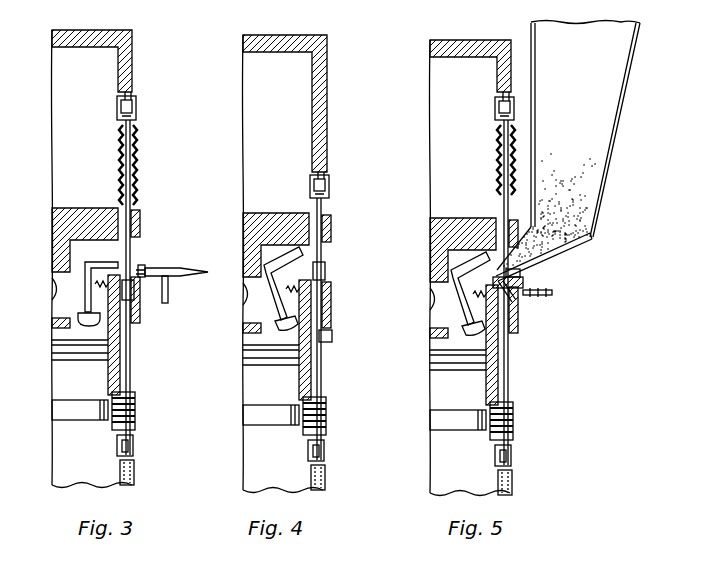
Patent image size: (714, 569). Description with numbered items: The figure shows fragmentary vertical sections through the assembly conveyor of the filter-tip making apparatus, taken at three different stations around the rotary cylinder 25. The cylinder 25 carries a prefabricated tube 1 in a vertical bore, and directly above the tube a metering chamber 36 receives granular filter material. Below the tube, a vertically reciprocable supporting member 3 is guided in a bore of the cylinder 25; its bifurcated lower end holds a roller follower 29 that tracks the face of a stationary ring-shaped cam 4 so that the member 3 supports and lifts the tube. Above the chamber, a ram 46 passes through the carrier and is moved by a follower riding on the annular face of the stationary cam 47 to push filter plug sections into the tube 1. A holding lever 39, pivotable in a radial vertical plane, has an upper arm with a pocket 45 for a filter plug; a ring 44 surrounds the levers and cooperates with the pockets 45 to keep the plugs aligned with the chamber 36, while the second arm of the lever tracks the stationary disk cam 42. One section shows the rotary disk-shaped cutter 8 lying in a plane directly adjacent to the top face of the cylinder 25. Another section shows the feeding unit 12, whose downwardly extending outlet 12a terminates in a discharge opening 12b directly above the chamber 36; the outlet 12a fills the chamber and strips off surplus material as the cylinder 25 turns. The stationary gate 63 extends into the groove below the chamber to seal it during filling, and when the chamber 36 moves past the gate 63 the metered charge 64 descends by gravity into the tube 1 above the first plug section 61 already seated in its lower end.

In FIG. 3, the prefabricated tube 1 is at (138, 330).
In FIG. 4, the prefabricated tube 1 is at (340, 305).
In FIG. 3, the supporting member 3 is at (137, 404).
In FIG. 3, the ring-shaped cam 4 is at (134, 474).
In FIG. 3, the rotary disk-shaped cutter 8 is at (194, 278).
In FIG. 5, the feeding unit 12 is at (604, 150).
In FIG. 5, the outlet 12a is at (589, 238).
In FIG. 5, the discharge opening 12b is at (514, 306).
In FIG. 3, the cylinder 25 is at (122, 366).
In FIG. 4, the cylinder 25 is at (332, 342).
In FIG. 5, the cylinder 25 is at (523, 345).
In FIG. 3, the roller follower 29 is at (134, 448).
In FIG. 3, the metering chamber 36 is at (136, 292).
In FIG. 5, the metering chamber 36 is at (524, 290).
In FIG. 3, the holding lever 39 is at (90, 262).
In FIG. 4, the holding lever 39 is at (283, 245).
In FIG. 5, the holding lever 39 is at (445, 294).
In FIG. 3, the disk cam 42 is at (78, 322).
In FIG. 4, the disk cam 42 is at (260, 341).
In FIG. 5, the disk cam 42 is at (444, 354).
In FIG. 3, the ring 44 is at (138, 270).
In FIG. 3, the pocket 45 is at (136, 262).
In FIG. 4, the pocket 45 is at (338, 236).
In FIG. 5, the pocket 45 is at (494, 210).
In FIG. 3, the ram 46 is at (137, 156).
In FIG. 4, the ram 46 is at (339, 268).
In FIG. 5, the ram 46 is at (503, 132).
In FIG. 3, the stationary cam 47 is at (131, 60).
In FIG. 4, the stationary cam 47 is at (320, 106).
In FIG. 5, the stationary cam 47 is at (497, 66).
In FIG. 4, the first plug section 61 is at (341, 347).
In FIG. 5, the gate 63 is at (529, 300).
In FIG. 5, the charge 64 is at (521, 280).